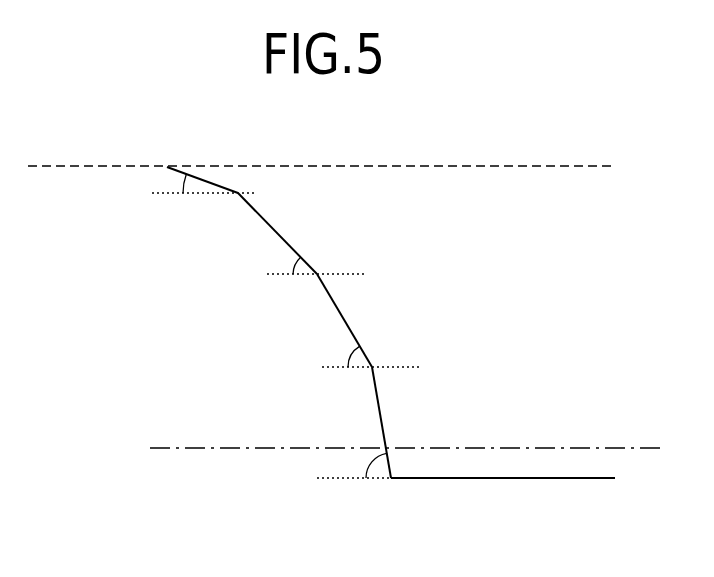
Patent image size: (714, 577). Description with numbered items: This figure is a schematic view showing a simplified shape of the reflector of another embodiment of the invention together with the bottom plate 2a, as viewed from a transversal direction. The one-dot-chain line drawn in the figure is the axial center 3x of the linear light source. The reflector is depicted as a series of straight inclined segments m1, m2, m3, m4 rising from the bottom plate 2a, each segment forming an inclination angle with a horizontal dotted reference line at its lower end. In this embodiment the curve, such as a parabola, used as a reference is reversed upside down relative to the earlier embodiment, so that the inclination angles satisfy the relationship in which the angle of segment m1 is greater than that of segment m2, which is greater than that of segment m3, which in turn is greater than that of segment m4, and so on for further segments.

The first inclined surface segment m1 is at (382, 423).
The second inclined surface segment m2 is at (345, 323).
The third inclined surface segment m3 is at (282, 234).
The fourth inclined surface segment m4 is at (203, 179).
The bottom plate 2a is at (530, 478).
The axial center 3x is at (637, 448).